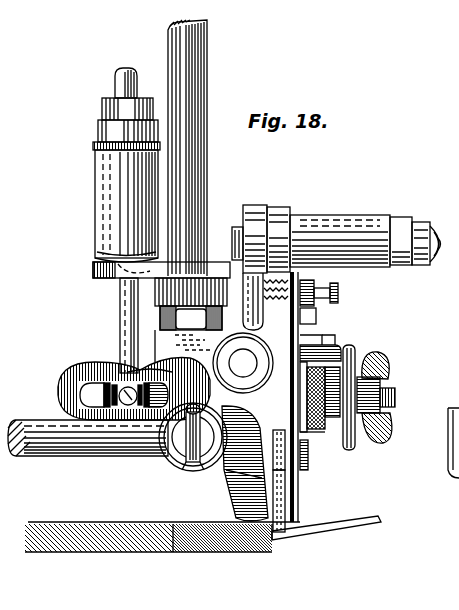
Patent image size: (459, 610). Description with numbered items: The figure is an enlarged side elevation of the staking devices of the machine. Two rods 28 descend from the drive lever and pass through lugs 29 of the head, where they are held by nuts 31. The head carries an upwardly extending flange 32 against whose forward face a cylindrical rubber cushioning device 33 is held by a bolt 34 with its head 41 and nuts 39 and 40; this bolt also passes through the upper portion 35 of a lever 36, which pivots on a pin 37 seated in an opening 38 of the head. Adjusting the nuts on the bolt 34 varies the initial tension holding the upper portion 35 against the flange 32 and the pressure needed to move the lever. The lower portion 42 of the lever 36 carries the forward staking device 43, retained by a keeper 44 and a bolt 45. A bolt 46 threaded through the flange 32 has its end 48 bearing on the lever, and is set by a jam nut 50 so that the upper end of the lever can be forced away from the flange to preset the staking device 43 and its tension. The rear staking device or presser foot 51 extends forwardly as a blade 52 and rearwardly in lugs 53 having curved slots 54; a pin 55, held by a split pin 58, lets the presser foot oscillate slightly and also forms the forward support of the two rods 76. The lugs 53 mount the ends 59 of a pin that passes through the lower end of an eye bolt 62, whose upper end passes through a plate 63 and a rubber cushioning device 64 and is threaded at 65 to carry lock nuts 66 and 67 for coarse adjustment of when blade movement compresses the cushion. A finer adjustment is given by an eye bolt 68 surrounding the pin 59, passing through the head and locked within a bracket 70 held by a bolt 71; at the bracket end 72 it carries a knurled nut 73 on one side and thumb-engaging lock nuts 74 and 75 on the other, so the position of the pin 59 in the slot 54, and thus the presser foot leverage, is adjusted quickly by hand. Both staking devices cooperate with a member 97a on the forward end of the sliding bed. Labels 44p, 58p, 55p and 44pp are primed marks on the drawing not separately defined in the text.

The rods 28 is at (200, 72).
The threaded end of eye bolt 65 is at (126, 68).
The lock nut 67 is at (122, 108).
The lock nut 66 is at (110, 132).
The cushioning device 64 is at (110, 194).
The plate 63 is at (93, 270).
The lugs 29 is at (173, 293).
The nuts 31 is at (191, 318).
The eye bolt 62 is at (130, 320).
The pin 37 is at (243, 363).
The lugs 53 is at (90, 372).
The ends of pin 59 is at (126, 396).
The curved slots 54 is at (80, 395).
The rods 76 is at (60, 438).
The pin 55 is at (178, 440).
The split pin 58 is at (186, 458).
The rear staking device or presser foot 51 is at (240, 470).
The blade 52 is at (246, 504).
The lower portion of lever 42 is at (272, 450).
The staking device 43 is at (286, 507).
The keeper 44 is at (136, 522).
The member 97a is at (262, 550).
The lever 36 is at (310, 316).
The cushioning device 33 is at (348, 228).
The flange 32 is at (277, 222).
The upper portion of lever 35 is at (255, 217).
The head of bolt 41 is at (238, 240).
The nut 39 is at (398, 222).
The nut 40 is at (421, 222).
The bolt 34 is at (438, 238).
The end of bolt 48 is at (265, 280).
The jam nut 50 is at (305, 280).
The bolt 46 is at (338, 297).
The bracket 70 is at (336, 350).
The bolt 71 is at (316, 345).
The opening 38 is at (338, 348).
The end of bracket 72 is at (326, 418).
The bolt 45 is at (316, 432).
The plate 44p is at (284, 472).
The lock nut 74 is at (355, 356).
The eye bolt 68 is at (385, 400).
The lock nut 75 is at (360, 420).
The knurled nut 73 is at (318, 433).
The bolt 58p is at (458, 398).
The hub 55p is at (452, 442).
The plate 44pp is at (455, 470).